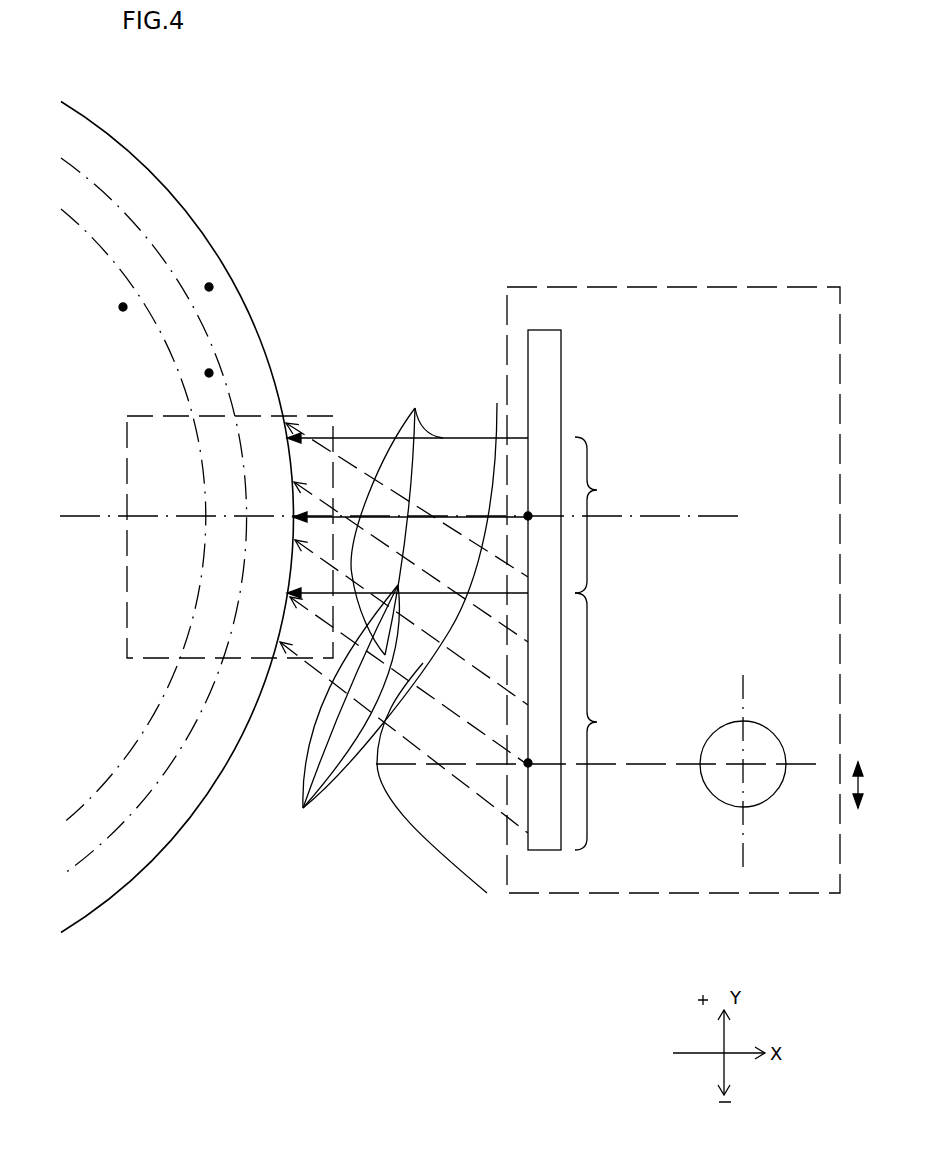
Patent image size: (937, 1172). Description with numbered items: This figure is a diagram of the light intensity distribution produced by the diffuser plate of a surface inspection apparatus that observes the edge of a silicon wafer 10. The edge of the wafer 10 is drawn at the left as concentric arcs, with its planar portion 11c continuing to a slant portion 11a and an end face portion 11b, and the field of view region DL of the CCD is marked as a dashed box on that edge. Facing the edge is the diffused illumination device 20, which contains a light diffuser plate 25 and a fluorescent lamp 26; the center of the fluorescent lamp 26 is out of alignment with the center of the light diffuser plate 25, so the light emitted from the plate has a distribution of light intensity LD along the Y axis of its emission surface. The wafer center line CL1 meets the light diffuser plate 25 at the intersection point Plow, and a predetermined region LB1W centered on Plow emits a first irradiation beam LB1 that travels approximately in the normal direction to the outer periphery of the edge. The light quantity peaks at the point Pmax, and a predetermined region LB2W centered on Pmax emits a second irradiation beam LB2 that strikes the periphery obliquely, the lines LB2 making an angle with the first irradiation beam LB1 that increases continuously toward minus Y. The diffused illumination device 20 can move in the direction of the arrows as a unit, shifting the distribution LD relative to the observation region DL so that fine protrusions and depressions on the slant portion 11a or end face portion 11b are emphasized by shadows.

The wafer 10 is at (192, 822).
The slant portion 11a is at (209, 373).
The end face portion 11b is at (209, 287).
The planar portion 11c is at (123, 307).
The diffused illumination device 20 is at (745, 286).
The light diffuser plate 25 is at (555, 850).
The fluorescent lamp 26 is at (773, 794).
The field of view region DL is at (323, 412).
The first irradiation beam LB1 is at (407, 518).
The second irradiation beam LB2 is at (404, 634).
The distribution of light intensity LD is at (437, 845).
The intersection point Plow is at (528, 516).
The peak point Pmax is at (528, 763).
The predetermined region LB1W is at (615, 515).
The predetermined region LB2W is at (615, 721).
The center line CL1 is at (735, 518).